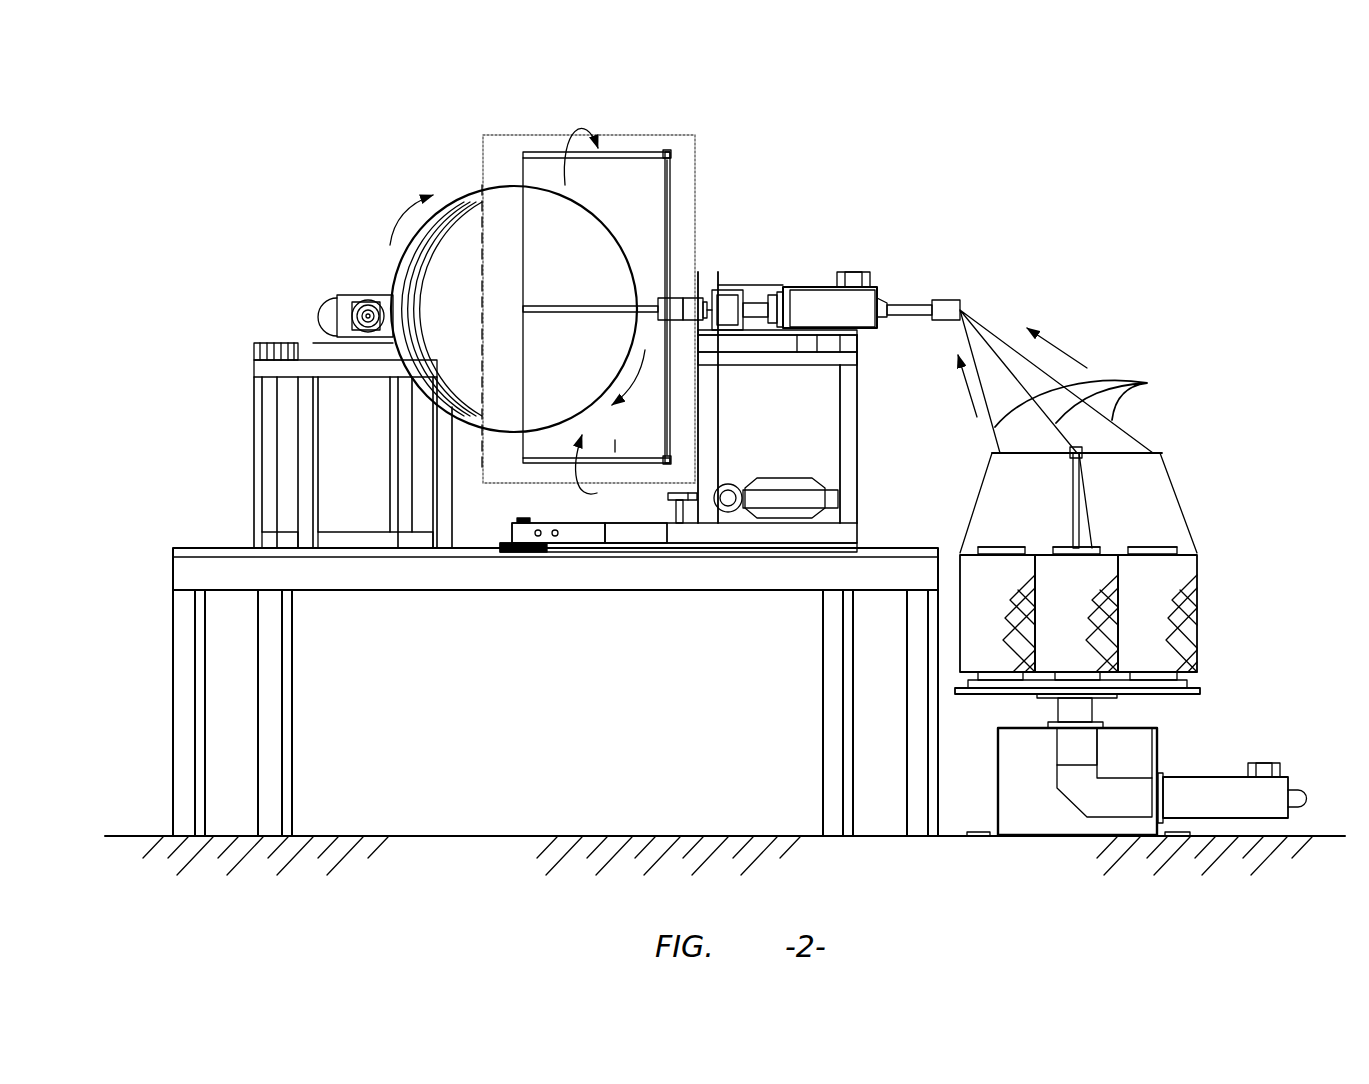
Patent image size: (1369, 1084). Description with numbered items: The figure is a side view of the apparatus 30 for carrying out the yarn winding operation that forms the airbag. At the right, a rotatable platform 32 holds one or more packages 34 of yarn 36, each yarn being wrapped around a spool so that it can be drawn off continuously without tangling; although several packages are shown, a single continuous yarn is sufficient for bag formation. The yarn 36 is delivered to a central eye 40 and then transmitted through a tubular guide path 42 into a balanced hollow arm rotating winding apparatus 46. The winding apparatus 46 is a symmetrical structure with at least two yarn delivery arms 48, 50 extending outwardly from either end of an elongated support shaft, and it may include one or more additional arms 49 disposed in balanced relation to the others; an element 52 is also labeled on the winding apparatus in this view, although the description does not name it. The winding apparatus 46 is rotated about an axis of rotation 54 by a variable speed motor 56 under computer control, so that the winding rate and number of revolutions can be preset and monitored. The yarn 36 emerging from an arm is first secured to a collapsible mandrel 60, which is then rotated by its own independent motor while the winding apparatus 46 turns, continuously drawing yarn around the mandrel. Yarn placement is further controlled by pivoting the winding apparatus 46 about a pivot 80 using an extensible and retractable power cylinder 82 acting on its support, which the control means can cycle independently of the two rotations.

The apparatus 30 is at (920, 192).
The rotatable platform 32 is at (1200, 675).
The packages 34 is at (1197, 598).
The yarn 36 is at (1075, 381).
The central eye 40 is at (950, 302).
The tubular guide path 42 is at (907, 303).
The winding apparatus 46 is at (697, 175).
The yarn delivery arm 48 is at (618, 152).
The additional arm 49 is at (540, 305).
The yarn delivery arm 50 is at (623, 463).
The frame member 52 is at (670, 217).
The axis of rotation 54 is at (667, 290).
The variable speed motor 56 is at (808, 297).
The collapsible mandrel 60 is at (463, 190).
The pivot 80 is at (526, 524).
The power cylinder 82 is at (755, 500).